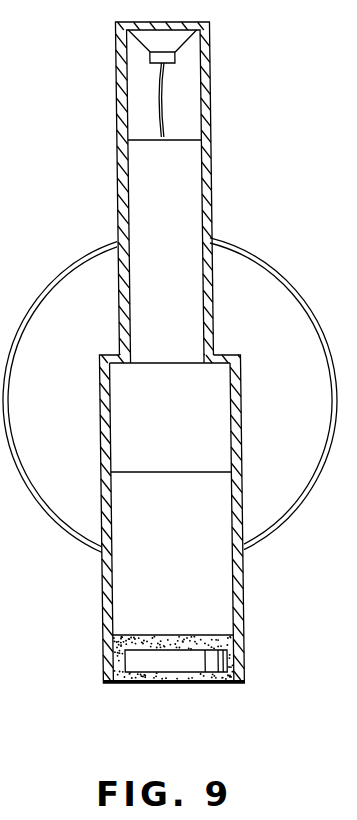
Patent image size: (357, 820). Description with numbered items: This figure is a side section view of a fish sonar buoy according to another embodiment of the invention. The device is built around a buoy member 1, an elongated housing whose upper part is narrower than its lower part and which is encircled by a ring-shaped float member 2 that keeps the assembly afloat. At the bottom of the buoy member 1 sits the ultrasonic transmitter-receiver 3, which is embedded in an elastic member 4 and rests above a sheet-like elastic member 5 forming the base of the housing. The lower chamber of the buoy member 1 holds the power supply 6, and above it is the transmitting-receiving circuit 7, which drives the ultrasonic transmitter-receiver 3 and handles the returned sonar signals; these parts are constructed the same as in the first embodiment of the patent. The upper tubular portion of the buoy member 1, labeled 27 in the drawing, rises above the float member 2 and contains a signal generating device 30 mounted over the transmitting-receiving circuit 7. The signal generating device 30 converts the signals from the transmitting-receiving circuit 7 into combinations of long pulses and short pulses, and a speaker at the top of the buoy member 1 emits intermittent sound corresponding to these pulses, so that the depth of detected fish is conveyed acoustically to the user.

The buoy member 1 is at (165, 372).
The float member 2 is at (289, 281).
The ultrasonic transmitter-receiver 3 is at (191, 662).
The elastic member 4 is at (235, 653).
The sheet-like elastic member 5 is at (136, 681).
The power supply 6 is at (128, 586).
The transmitting-receiving circuit 7 is at (197, 399).
The upper tube 27 is at (187, 240).
The signal generating device 30 is at (194, 38).